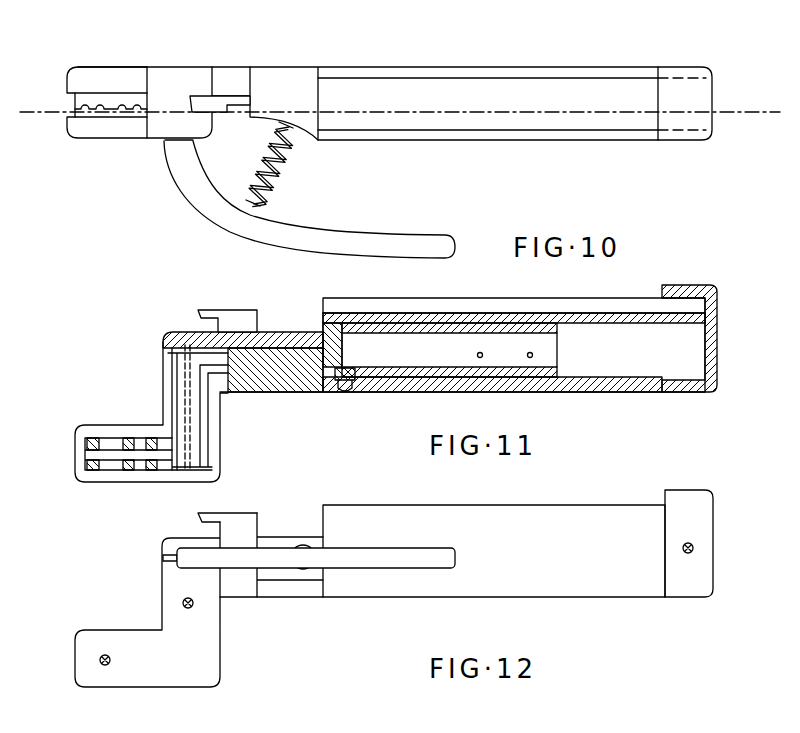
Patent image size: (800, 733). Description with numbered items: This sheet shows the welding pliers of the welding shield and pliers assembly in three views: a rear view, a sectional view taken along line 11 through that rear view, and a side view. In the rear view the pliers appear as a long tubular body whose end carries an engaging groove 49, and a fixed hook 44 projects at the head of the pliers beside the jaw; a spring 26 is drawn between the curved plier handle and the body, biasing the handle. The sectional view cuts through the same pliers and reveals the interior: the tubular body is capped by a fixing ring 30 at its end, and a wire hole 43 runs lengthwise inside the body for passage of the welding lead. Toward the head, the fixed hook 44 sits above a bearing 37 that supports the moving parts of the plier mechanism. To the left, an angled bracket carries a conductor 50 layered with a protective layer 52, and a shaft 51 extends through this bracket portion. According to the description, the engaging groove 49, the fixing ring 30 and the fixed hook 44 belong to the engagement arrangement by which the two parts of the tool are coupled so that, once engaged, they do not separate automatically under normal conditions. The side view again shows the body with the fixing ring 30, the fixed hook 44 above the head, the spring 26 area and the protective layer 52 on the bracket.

In FIG. 10, the section line 11- 11 is at (43, 118).
In FIG. 12, the spring 26 is at (307, 577).
In FIG. 11, the fixing ring 30 is at (720, 330).
In FIG. 12, the fixing ring 30 is at (518, 543).
In FIG. 11, the bearing 37 is at (185, 347).
In FIG. 11, the wire hole 43 is at (500, 352).
In FIG. 10, the fixed hook 44 is at (200, 97).
In FIG. 11, the fixed hook 44 is at (232, 317).
In FIG. 12, the fixed hook 44 is at (227, 517).
In FIG. 10, the engaging groove 49 is at (593, 110).
In FIG. 11, the conductor 50 is at (122, 455).
In FIG. 11, the shaft 51 is at (192, 405).
In FIG. 12, the shaft 51 is at (316, 558).
In FIG. 11, the protective layer 52 is at (155, 480).
In FIG. 12, the protective layer 52 is at (199, 604).